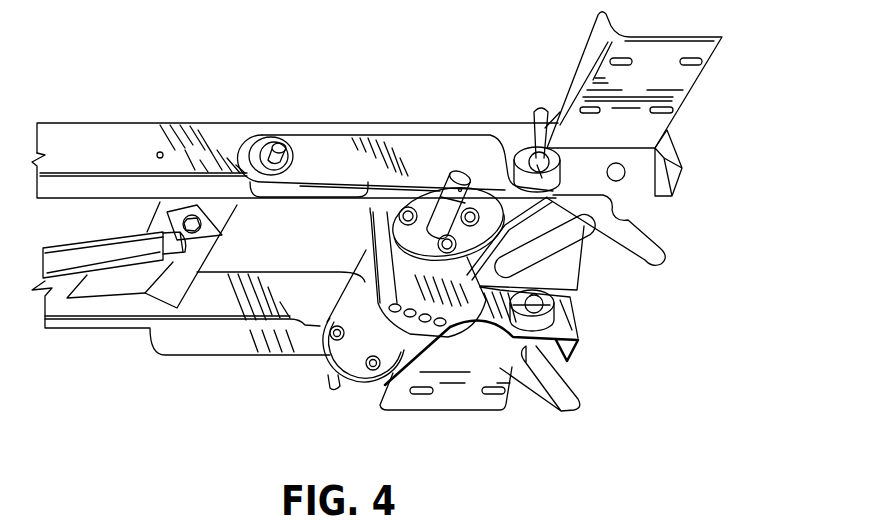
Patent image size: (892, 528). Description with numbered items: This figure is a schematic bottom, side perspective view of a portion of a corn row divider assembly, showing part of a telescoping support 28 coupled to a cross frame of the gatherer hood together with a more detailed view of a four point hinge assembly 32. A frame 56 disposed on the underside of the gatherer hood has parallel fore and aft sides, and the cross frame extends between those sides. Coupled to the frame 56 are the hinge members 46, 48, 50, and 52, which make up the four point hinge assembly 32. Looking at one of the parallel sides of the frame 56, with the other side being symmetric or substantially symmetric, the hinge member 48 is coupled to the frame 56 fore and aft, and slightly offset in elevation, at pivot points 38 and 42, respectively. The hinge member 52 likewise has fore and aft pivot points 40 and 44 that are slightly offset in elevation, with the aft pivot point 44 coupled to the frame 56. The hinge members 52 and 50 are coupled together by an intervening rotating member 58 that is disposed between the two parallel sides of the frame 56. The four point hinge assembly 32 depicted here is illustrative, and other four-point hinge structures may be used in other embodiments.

The telescoping support 28 is at (100, 262).
The four point hinge assembly 32 is at (632, 301).
The pivot point 38 is at (280, 144).
The pivot point 40 is at (455, 174).
The pivot point 42 is at (538, 136).
The pivot point 44 is at (623, 175).
The hinge member 46 is at (215, 347).
The hinge member 48 is at (338, 167).
The hinge member 50 is at (580, 396).
The hinge member 52 is at (234, 206).
The frame 56 is at (105, 134).
The rotating member 58 is at (400, 343).